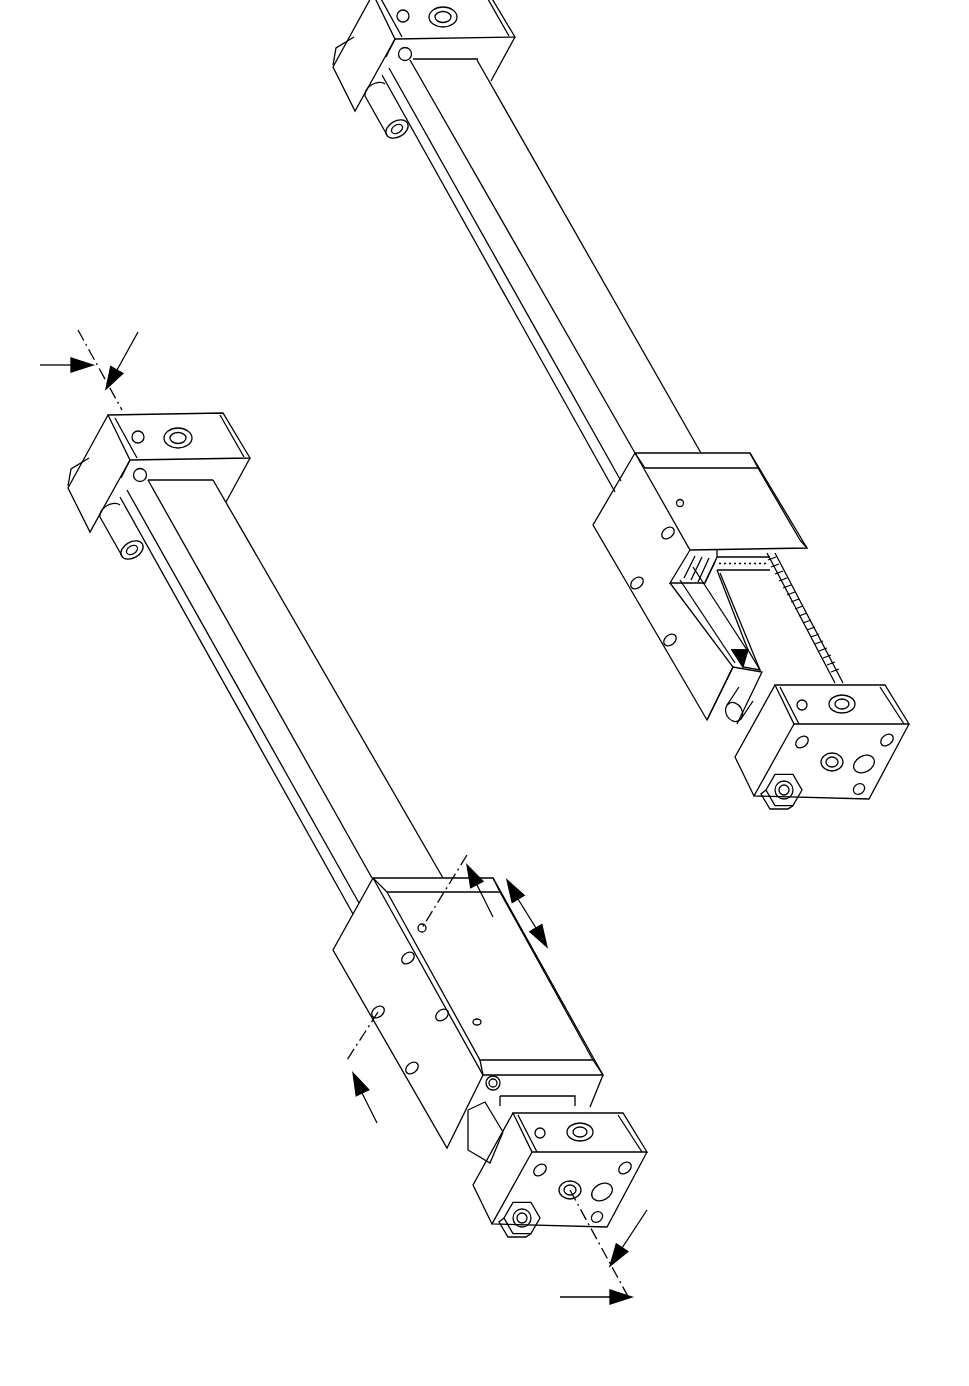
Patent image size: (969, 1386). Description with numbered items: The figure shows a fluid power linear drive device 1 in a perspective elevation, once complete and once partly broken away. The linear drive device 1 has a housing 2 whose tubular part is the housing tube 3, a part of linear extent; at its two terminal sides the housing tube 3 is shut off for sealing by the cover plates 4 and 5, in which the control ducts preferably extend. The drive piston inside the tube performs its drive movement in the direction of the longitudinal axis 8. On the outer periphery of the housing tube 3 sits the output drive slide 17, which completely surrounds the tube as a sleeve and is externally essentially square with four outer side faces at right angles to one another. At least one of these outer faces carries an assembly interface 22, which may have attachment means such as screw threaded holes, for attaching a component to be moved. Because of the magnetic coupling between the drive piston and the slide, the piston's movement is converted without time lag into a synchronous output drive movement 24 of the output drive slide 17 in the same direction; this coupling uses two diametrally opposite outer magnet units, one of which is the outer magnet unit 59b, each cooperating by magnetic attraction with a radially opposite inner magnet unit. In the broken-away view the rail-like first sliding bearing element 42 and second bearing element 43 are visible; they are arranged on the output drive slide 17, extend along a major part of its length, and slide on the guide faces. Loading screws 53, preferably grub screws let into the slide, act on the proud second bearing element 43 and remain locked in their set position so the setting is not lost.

In FIG. 1, the linear drive device 1 is at (238, 762).
In FIG. 2, the linear drive device 1 is at (447, 238).
In FIG. 1, the housing 2 is at (334, 838).
In FIG. 1, the housing tube 3 is at (255, 555).
In FIG. 2, the housing tube 3 is at (555, 227).
In FIG. 1, the cover plate 4 is at (615, 1137).
In FIG. 1, the cover plate 5 is at (215, 441).
In FIG. 1, the longitudinal axis 8 is at (69, 327).
In FIG. 1, the output drive slide 17 is at (517, 987).
In FIG. 2, the output drive slide 17 is at (753, 507).
In FIG. 1, the assembly interface 22 is at (408, 1003).
In FIG. 1, the output drive movement 24 is at (523, 910).
In FIG. 2, the first sliding bearing element 42 is at (803, 617).
In FIG. 2, the second bearing element 43 is at (715, 625).
In FIG. 1, the loading screws 53 is at (428, 926).
In FIG. 2, the outer magnet unit 59b is at (757, 553).